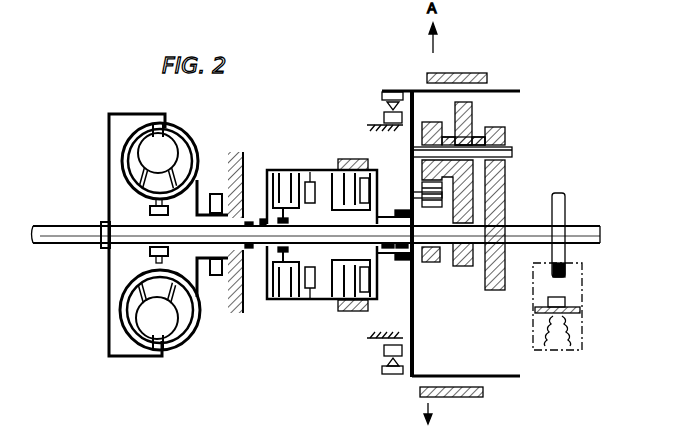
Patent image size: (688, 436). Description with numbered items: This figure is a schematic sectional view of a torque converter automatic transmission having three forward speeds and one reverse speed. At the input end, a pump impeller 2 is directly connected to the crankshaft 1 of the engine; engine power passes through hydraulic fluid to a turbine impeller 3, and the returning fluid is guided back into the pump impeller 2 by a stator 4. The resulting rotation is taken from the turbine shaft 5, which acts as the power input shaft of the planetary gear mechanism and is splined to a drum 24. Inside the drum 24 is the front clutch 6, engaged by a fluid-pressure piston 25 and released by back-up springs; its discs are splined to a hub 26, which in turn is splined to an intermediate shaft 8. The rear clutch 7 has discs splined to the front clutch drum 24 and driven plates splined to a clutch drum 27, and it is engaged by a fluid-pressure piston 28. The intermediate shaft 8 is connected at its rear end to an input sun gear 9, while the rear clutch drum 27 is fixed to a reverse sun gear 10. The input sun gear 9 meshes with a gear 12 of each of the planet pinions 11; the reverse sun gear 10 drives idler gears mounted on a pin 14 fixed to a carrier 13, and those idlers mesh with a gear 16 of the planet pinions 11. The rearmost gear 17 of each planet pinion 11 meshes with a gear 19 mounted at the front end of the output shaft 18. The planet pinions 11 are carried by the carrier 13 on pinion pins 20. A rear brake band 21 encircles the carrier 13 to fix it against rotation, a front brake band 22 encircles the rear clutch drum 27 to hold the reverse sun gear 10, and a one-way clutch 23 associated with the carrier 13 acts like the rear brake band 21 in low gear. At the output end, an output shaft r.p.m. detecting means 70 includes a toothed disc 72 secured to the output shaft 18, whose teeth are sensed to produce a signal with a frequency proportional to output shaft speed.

The crankshaft 1 is at (50, 243).
The pump impeller 2 is at (184, 132).
The turbine impeller 3 is at (133, 146).
The stator 4 is at (145, 188).
The turbine shaft 5 is at (250, 244).
The front clutch 6 is at (281, 300).
The rear clutch 7 is at (336, 300).
The intermediate shaft 8 is at (395, 262).
The input sun gear 9 is at (463, 267).
The reverse sun gear 10 is at (428, 263).
The planet pinions 11 is at (480, 132).
The gear 12 is at (465, 108).
The carrier 13 is at (411, 152).
The pin 14 is at (421, 196).
The gear 16 is at (428, 122).
The rearmost gear 17 is at (500, 134).
The output shaft 18 is at (566, 218).
The gear 19 is at (505, 196).
The pinion pins 20 is at (512, 152).
The rear brake band 21 is at (470, 73).
The front brake band 22 is at (350, 158).
The one-way clutch 23 is at (384, 112).
The drum 24 is at (272, 170).
The piston 25 is at (310, 180).
The hub 26 is at (271, 286).
The clutch drum 27 is at (346, 312).
The piston 28 is at (366, 312).
The output shaft r.p.m. detecting means 70 is at (582, 320).
The toothed disc 72 is at (570, 269).